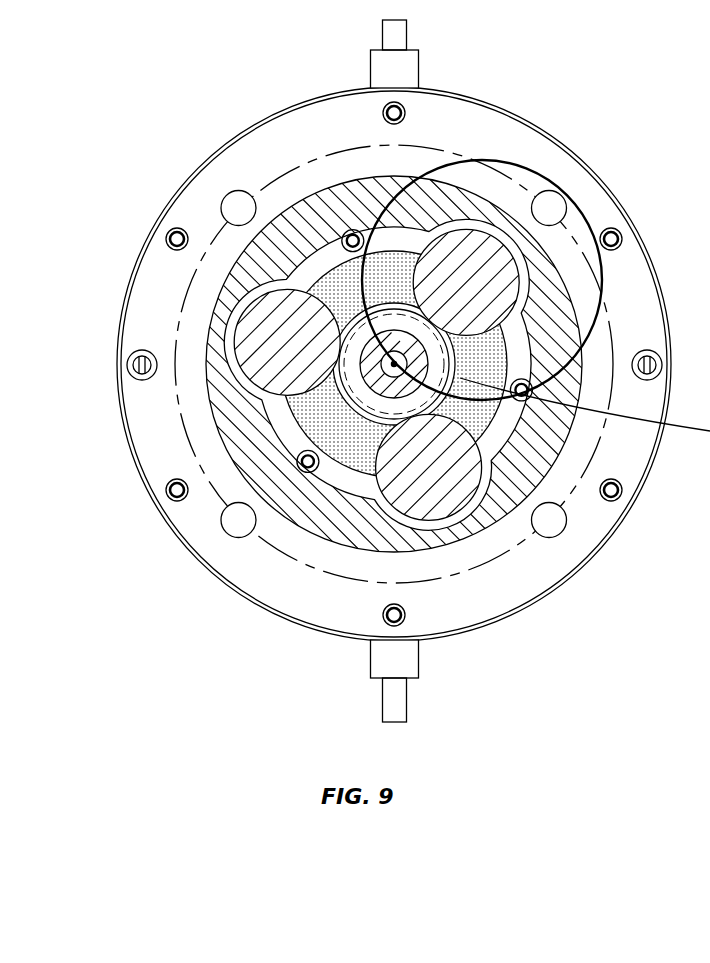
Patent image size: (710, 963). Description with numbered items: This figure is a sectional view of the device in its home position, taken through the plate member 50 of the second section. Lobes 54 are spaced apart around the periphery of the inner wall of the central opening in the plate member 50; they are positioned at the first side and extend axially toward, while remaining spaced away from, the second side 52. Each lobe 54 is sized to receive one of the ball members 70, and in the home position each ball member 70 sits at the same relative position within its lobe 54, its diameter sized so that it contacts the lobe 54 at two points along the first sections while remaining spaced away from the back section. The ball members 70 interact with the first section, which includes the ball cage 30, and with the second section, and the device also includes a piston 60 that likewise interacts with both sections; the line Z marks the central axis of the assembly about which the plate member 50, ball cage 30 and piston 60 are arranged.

The plate member 50 is at (253, 157).
The second side 52 is at (470, 153).
The lobes 54 is at (232, 318).
The ball members 70 is at (273, 347).
The ball cage 30 is at (345, 399).
The piston 60 is at (388, 390).
The axis Z is at (393, 368).